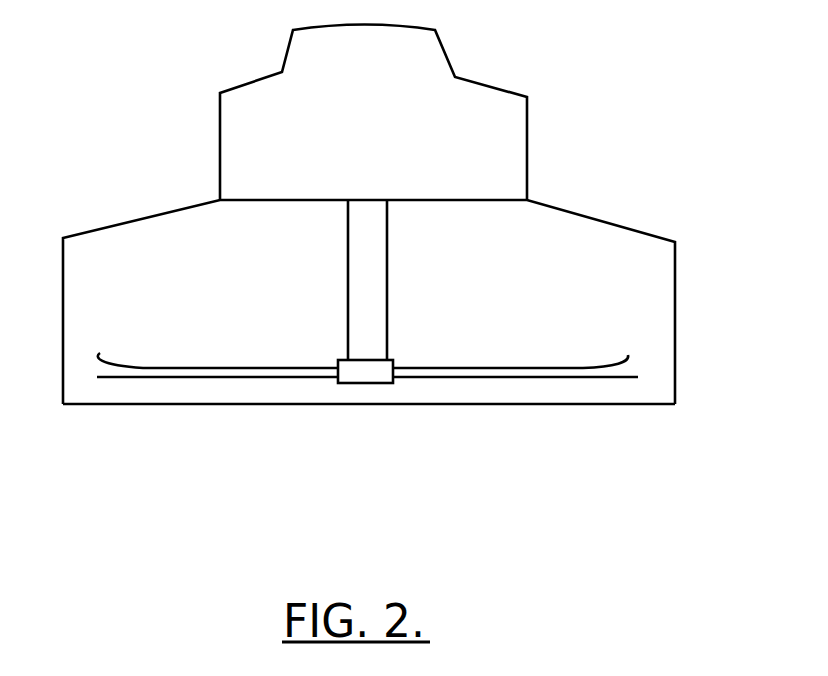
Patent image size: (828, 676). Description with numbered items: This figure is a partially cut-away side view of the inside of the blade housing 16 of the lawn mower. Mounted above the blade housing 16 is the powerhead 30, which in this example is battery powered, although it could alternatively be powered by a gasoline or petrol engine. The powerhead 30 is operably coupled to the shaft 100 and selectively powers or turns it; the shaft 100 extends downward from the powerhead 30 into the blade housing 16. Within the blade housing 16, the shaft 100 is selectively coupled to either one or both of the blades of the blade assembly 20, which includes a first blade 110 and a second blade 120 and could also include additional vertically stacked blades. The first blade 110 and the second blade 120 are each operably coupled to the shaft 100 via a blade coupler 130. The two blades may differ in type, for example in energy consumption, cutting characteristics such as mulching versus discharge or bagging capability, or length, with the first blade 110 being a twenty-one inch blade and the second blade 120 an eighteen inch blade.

The blade housing 16 is at (83, 235).
The blade assembly 20 is at (223, 401).
The powerhead 30 is at (302, 115).
The shaft 100 is at (357, 258).
The first blade 110 is at (153, 377).
The second blade 120 is at (558, 367).
The blade coupler 130 is at (357, 375).